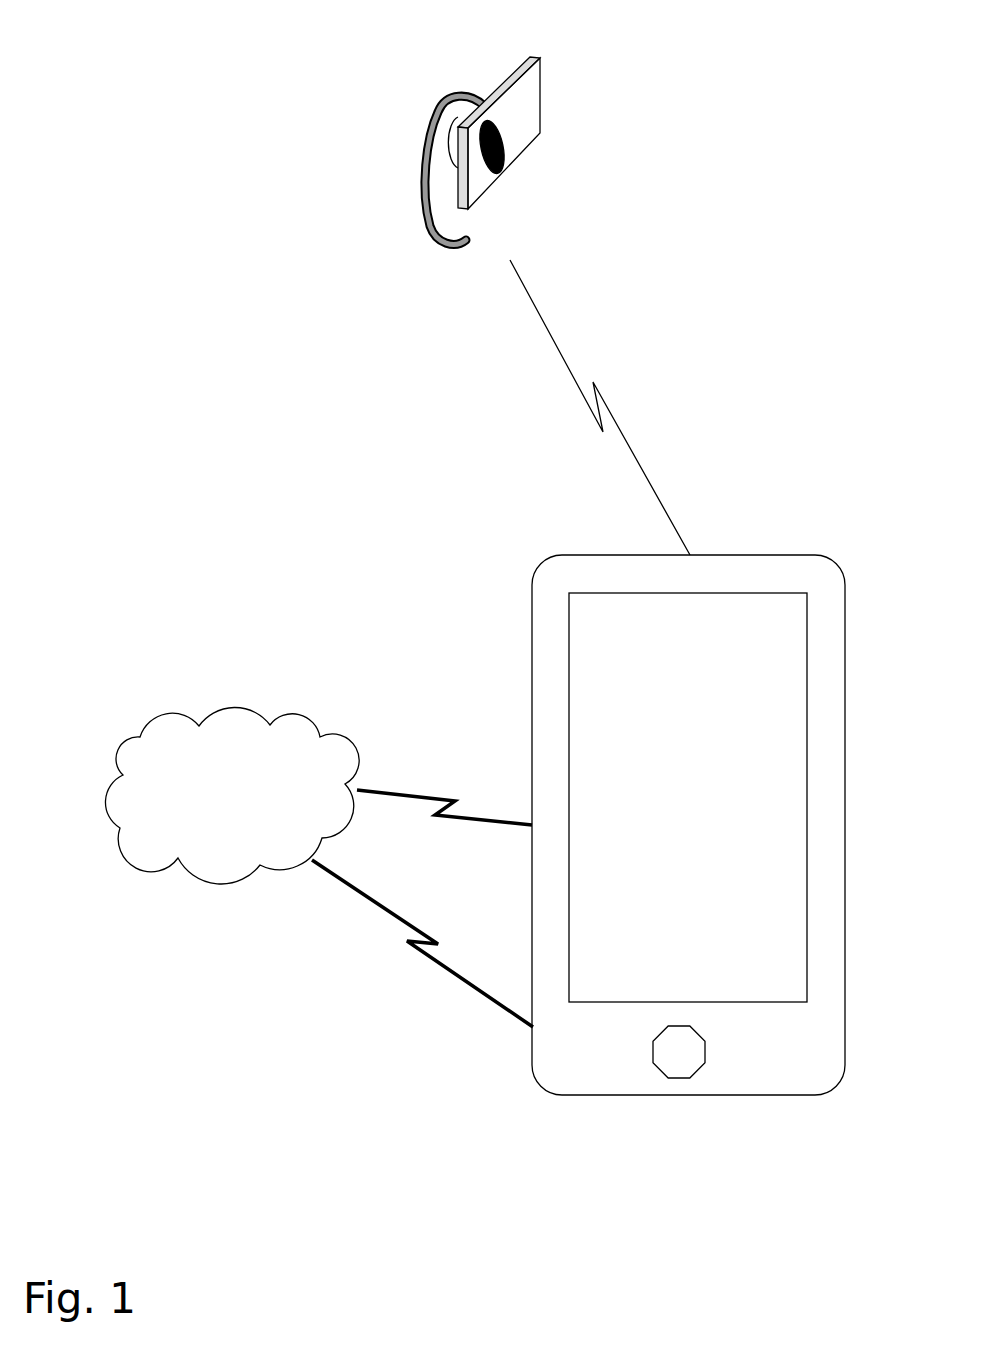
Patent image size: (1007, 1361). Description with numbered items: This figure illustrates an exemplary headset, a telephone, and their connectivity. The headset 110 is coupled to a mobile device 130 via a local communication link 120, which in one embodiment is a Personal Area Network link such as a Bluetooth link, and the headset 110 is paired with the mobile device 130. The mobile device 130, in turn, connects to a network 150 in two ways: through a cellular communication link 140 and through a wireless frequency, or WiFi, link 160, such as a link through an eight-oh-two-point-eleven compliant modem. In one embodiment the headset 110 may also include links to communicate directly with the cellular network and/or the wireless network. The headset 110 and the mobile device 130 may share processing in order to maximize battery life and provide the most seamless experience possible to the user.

The headset 110 is at (573, 146).
The local communication link 120 is at (697, 407).
The mobile device 130 is at (688, 825).
The cellular communication link 140 is at (436, 749).
The network 150 is at (232, 795).
The WiFi link 160 is at (422, 943).